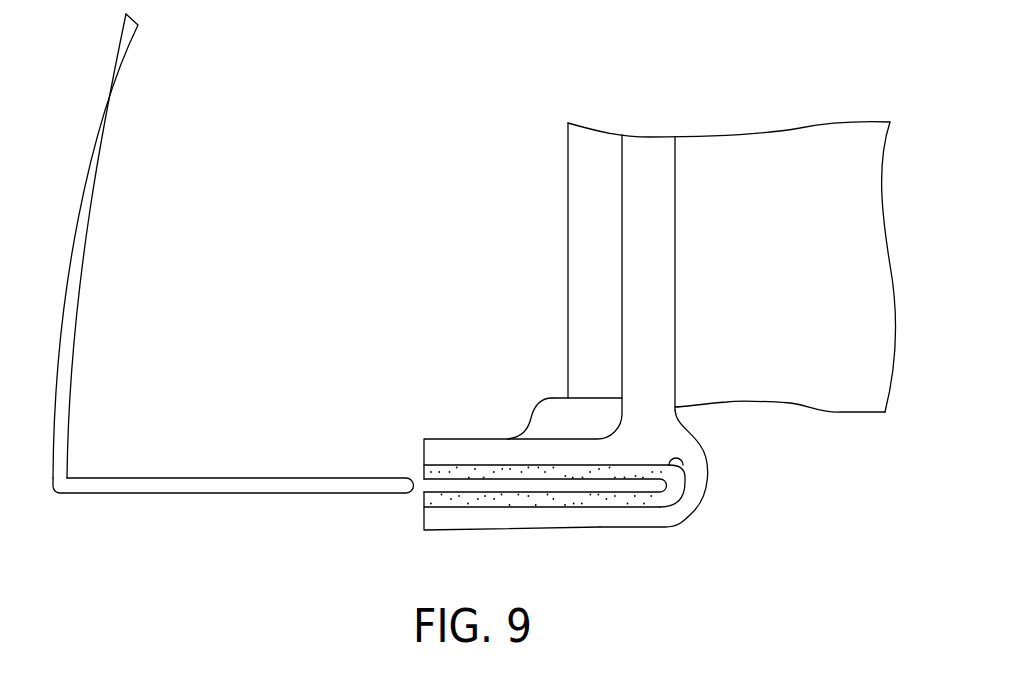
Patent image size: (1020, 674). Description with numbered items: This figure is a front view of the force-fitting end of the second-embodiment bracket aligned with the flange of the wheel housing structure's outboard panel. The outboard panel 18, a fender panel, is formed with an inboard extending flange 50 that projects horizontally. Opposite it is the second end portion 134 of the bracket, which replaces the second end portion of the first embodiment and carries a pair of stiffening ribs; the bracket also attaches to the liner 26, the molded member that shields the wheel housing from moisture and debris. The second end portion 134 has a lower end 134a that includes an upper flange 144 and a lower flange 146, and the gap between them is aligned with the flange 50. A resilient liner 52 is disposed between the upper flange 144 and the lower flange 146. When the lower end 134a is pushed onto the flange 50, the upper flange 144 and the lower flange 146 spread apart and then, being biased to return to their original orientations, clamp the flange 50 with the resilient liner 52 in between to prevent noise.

The outboard panel 18 is at (100, 97).
The inboard extending flange 50 is at (205, 485).
The liner 26 is at (824, 168).
The second end portion 134 is at (677, 240).
The lower end 134a is at (673, 447).
The upper flange 144 is at (456, 452).
The lower flange 146 is at (456, 518).
The resilient liner 52 is at (628, 500).